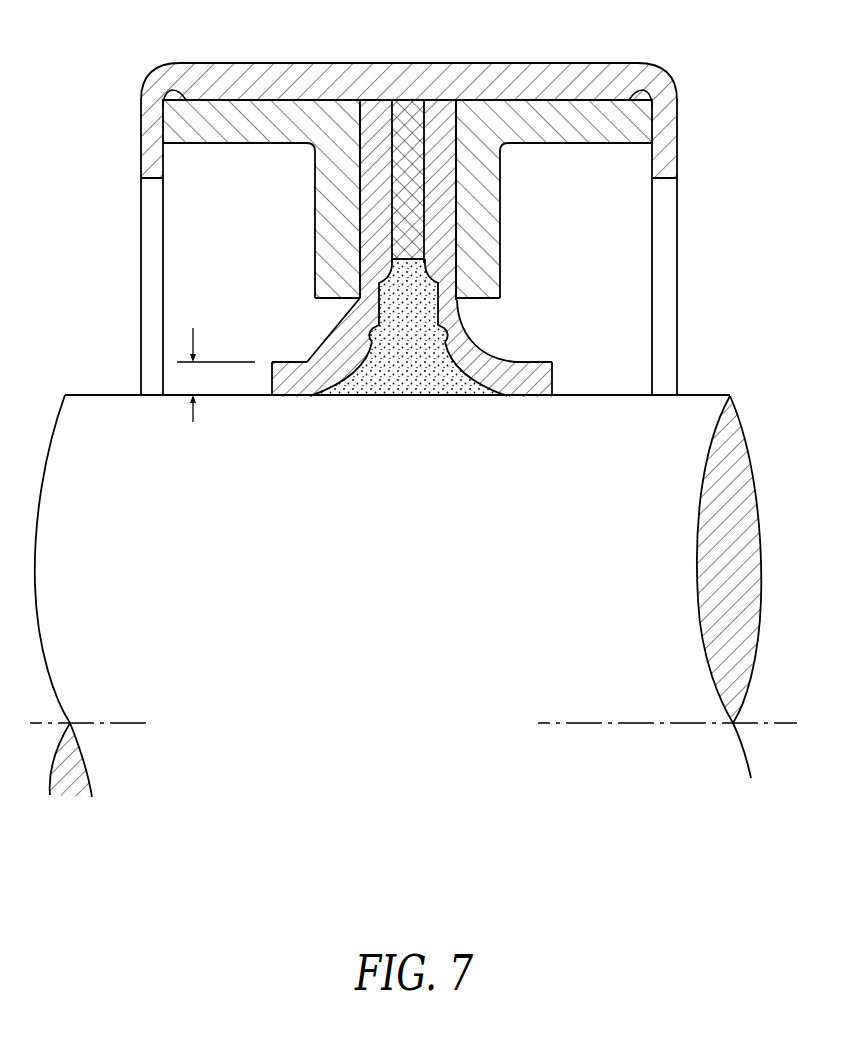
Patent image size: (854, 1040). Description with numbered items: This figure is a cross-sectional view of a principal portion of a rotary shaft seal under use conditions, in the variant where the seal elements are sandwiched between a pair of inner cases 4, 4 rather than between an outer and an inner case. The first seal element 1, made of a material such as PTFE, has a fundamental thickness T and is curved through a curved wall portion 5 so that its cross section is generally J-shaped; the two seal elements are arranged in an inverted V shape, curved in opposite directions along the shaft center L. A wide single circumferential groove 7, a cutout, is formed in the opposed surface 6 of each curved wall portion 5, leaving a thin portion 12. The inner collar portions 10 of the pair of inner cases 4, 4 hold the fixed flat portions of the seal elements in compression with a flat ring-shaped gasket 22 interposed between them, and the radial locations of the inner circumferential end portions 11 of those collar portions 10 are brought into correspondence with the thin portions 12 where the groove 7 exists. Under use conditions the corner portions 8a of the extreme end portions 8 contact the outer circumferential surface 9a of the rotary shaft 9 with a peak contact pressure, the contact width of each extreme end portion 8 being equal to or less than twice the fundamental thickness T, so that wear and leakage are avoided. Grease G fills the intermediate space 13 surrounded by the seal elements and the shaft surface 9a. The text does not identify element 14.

The first seal element 1 is at (304, 362).
The inner case 4 is at (286, 124).
The curved wall portion 5 is at (360, 337).
The opposed surface 6 is at (366, 365).
The single circumferential groove 7 is at (381, 322).
The extreme end portion 8 is at (268, 375).
The corner portion 8a is at (264, 395).
The rotary shaft 9 is at (657, 534).
The outer circumferential surface 9a is at (692, 395).
The inner collar portion 10 is at (322, 203).
The inner circumferential end portion 11 is at (333, 285).
The thin portion 12 is at (365, 283).
The intermediate space 13 is at (407, 320).
The contact face 14 is at (278, 395).
The flat ring-shaped gasket 22 is at (408, 118).
The grease G is at (450, 382).
The fundamental thickness T is at (216, 374).
The shaft center L is at (757, 714).